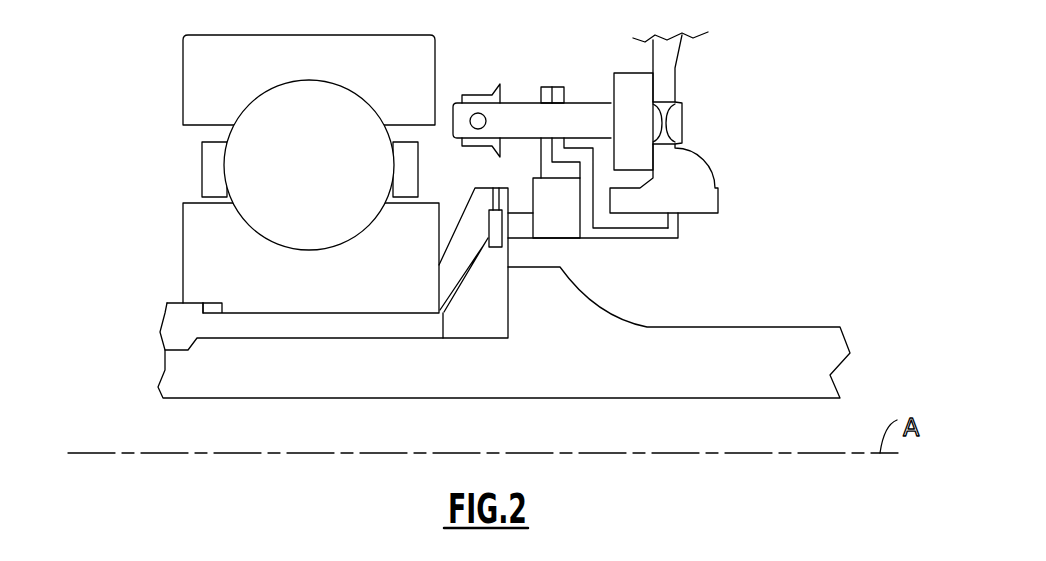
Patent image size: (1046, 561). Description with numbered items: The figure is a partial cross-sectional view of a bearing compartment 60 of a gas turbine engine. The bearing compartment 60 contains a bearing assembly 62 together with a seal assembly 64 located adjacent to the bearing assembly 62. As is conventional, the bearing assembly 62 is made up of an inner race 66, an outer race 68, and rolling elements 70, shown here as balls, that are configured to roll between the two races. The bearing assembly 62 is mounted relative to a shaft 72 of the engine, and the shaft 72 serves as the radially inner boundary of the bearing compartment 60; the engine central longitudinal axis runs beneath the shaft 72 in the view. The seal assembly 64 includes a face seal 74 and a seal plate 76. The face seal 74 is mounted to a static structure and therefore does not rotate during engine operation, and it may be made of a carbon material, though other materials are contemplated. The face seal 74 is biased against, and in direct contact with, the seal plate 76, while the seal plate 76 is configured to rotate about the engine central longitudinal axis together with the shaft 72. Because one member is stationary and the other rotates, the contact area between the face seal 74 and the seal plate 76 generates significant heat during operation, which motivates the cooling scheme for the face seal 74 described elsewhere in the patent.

The bearing compartment 60 is at (256, 174).
The bearing assembly 62 is at (182, 156).
The seal assembly 64 is at (455, 175).
The inner race 66 is at (326, 296).
The outer race 68 is at (325, 70).
The rolling elements 70 is at (325, 170).
The shaft 72 is at (641, 381).
The face seal 74 is at (572, 224).
The seal plate 76 is at (501, 303).